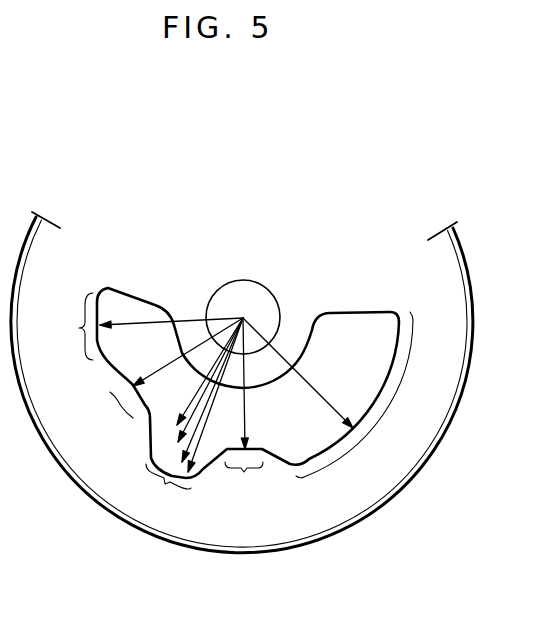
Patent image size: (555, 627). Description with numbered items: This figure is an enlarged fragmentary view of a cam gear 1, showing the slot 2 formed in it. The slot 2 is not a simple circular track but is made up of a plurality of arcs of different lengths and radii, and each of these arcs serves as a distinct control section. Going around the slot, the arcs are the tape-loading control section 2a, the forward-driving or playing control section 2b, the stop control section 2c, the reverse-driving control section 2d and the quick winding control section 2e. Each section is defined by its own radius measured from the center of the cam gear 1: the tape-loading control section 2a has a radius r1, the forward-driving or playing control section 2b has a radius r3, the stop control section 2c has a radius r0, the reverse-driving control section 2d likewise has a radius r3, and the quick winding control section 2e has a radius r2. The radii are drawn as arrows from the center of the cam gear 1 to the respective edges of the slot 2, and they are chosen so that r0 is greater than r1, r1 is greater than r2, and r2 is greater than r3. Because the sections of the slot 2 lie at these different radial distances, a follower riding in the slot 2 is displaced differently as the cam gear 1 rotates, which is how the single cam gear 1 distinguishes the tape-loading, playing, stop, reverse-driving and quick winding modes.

The cam gear 1 is at (430, 380).
The slot 2 is at (383, 330).
The tape-loading control section 2a is at (371, 430).
The forward-driving or playing control section 2b is at (244, 481).
The stop control section 2c is at (168, 488).
The reverse-driving control section 2d is at (108, 405).
The quick winding control section 2e is at (69, 326).
The radius of stop control section r0 is at (201, 434).
The radius of tape-loading control section r1 is at (163, 457).
The radius of quick winding control section r2 is at (177, 447).
The radius of forward-driving and reverse-driving control sections r3 is at (172, 430).